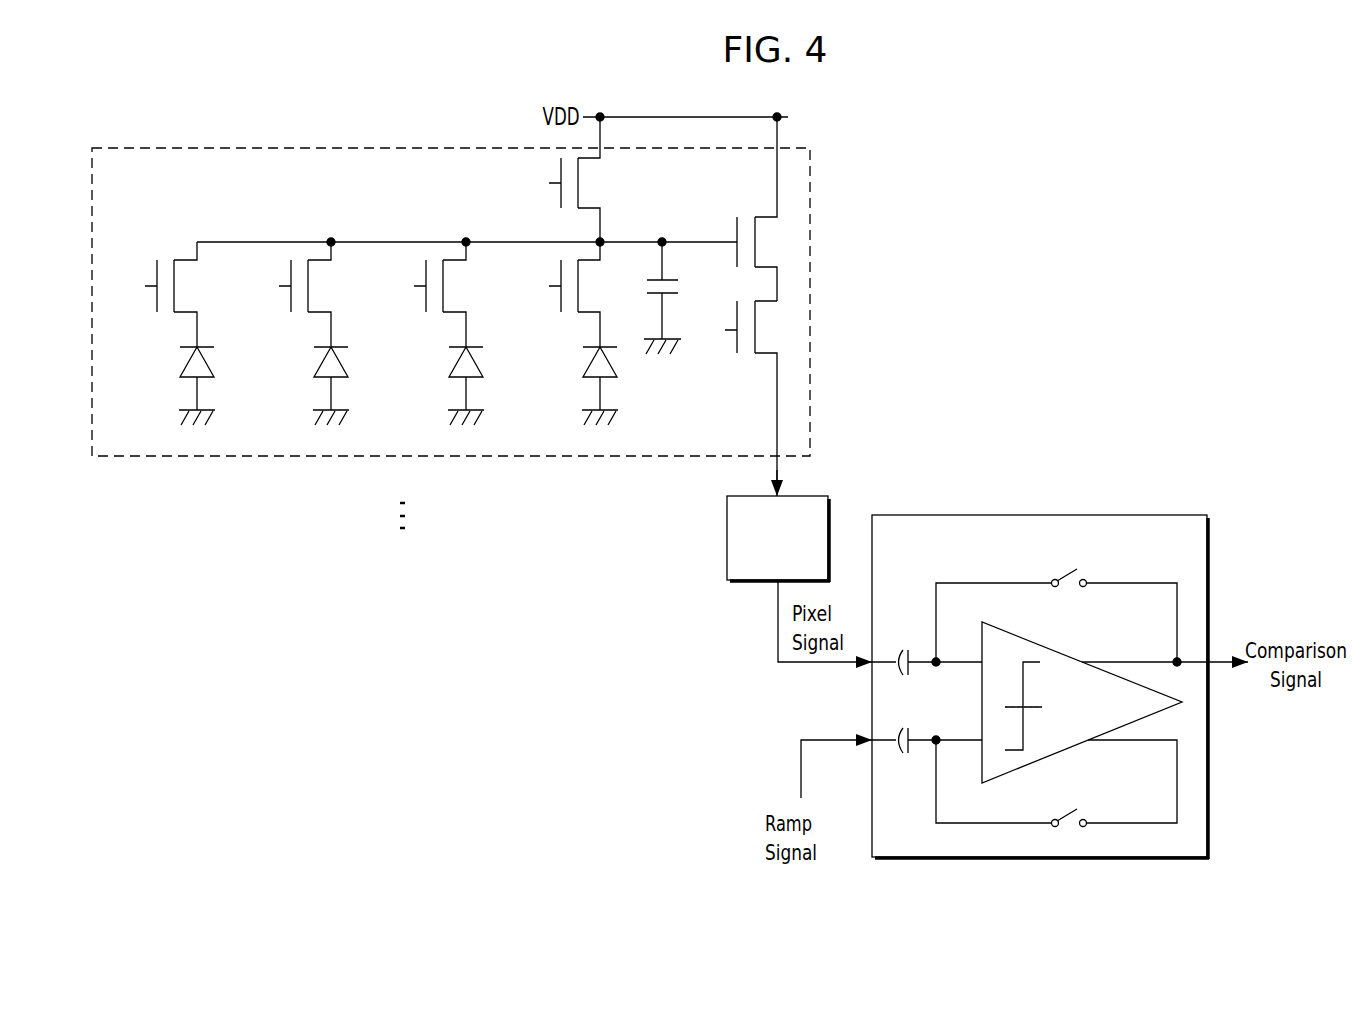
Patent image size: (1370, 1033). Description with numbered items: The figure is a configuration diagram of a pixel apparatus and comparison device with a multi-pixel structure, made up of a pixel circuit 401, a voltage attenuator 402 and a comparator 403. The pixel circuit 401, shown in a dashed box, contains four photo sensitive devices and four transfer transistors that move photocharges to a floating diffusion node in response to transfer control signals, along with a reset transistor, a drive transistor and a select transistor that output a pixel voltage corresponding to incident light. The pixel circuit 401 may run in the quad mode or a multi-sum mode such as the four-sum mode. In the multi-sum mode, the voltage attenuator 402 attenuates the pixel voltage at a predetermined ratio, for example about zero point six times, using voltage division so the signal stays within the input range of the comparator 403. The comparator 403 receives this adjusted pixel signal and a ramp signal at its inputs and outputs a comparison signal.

The pixel circuit 401 is at (810, 172).
The voltage attenuator 402 is at (805, 495).
The comparator 403 is at (1155, 514).